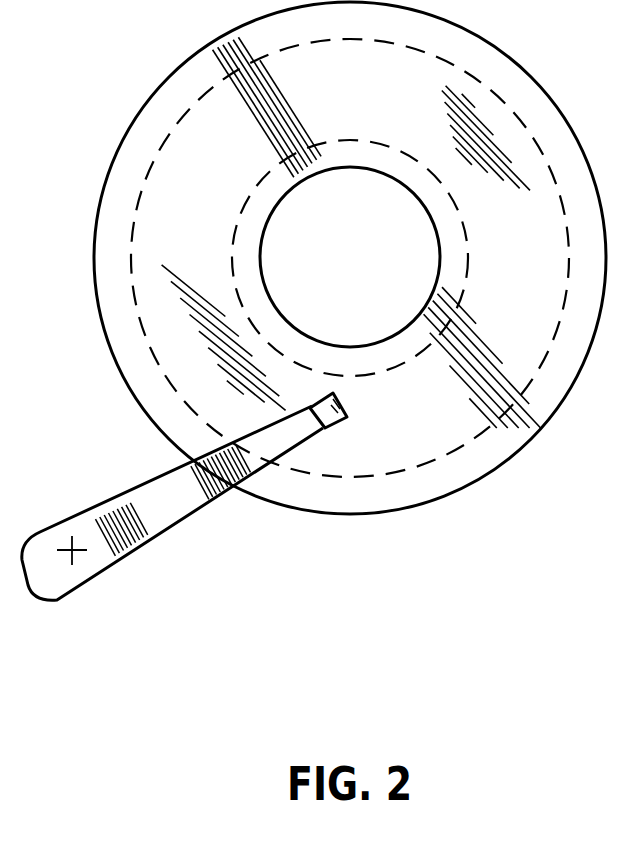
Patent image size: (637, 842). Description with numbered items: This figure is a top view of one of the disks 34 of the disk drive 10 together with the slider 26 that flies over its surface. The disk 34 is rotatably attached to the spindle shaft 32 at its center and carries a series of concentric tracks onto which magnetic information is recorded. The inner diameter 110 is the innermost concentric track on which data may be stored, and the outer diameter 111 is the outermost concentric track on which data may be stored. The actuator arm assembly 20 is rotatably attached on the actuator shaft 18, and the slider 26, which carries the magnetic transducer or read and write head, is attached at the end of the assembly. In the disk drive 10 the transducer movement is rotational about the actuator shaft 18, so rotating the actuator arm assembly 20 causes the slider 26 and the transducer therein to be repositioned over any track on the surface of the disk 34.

The disk drive 10 is at (117, 99).
The outer diameter (OD) 111 is at (468, 71).
The inner diameter (ID) 110 is at (455, 199).
The spindle shaft 32 is at (438, 251).
The disk 34 is at (112, 350).
The actuator arm assembly 20 is at (155, 510).
The slider 26 is at (350, 407).
The actuator shaft 18 is at (76, 553).